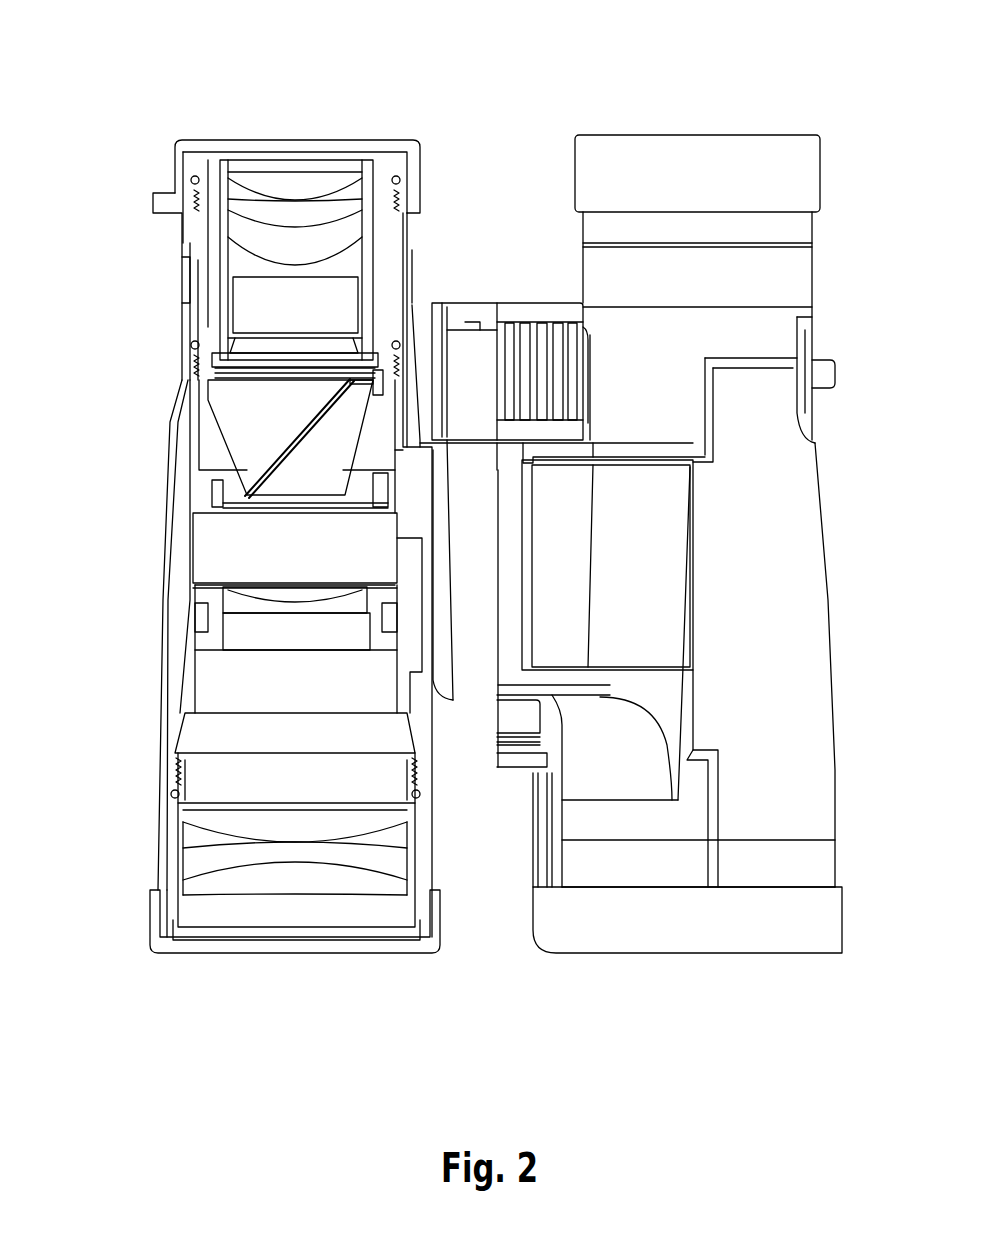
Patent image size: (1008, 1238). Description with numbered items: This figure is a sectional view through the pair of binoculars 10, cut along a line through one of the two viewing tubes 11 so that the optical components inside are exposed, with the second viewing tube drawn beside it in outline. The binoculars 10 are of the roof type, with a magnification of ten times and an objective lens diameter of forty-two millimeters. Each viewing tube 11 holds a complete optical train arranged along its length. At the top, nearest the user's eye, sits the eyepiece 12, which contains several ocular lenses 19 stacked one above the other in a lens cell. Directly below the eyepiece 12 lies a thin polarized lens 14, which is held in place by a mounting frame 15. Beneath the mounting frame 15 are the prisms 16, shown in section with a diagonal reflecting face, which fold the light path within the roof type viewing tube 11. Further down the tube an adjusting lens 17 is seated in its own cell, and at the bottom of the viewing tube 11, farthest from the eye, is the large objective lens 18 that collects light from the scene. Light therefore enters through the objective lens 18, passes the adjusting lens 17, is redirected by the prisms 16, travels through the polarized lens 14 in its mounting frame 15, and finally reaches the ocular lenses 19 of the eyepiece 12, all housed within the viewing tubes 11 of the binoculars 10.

The binoculars 10 is at (527, 93).
The viewing tube 11 is at (531, 914).
The eyepiece 12 is at (244, 210).
The polarized lens 14 is at (213, 367).
The mounting frame 15 is at (213, 373).
The prisms 16 is at (242, 430).
The adjusting lens 17 is at (237, 602).
The objective lens 18 is at (247, 825).
The ocular lens 19 is at (335, 180).